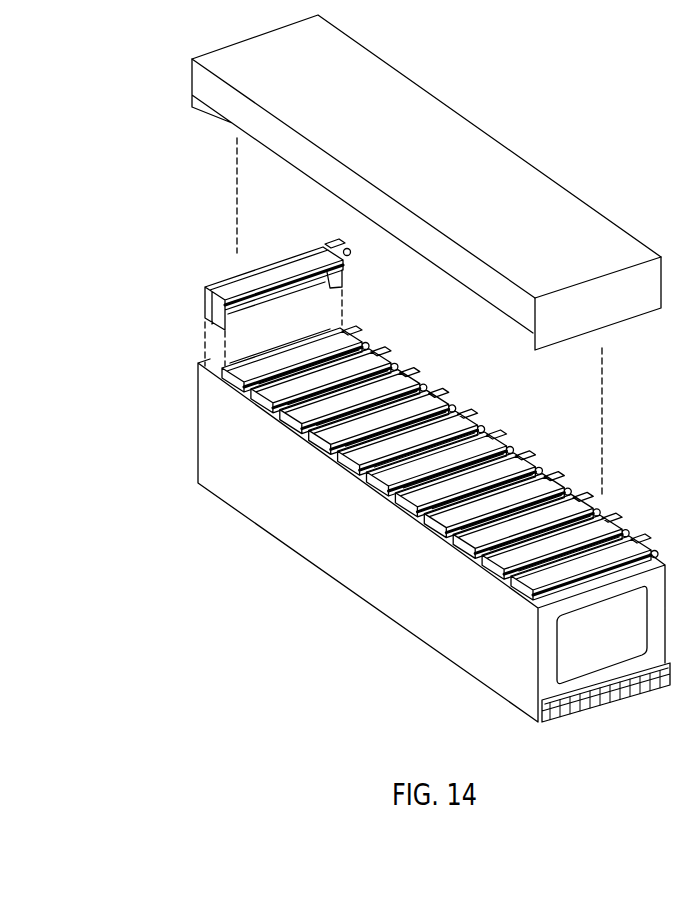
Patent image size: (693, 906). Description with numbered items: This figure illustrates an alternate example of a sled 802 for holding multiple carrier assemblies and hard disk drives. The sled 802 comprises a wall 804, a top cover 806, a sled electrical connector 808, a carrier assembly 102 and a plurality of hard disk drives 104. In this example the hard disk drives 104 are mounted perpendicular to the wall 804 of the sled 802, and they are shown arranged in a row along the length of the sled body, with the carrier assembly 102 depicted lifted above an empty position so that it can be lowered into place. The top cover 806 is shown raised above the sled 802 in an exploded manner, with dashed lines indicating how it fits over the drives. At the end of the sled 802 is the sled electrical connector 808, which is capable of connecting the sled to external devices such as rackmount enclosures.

The carrier assembly 102 is at (198, 305).
The hard disk drive 104 is at (327, 313).
The sled 802 is at (360, 388).
The wall 804 is at (223, 458).
The top cover 806 is at (437, 133).
The sled electrical connector 808 is at (617, 697).